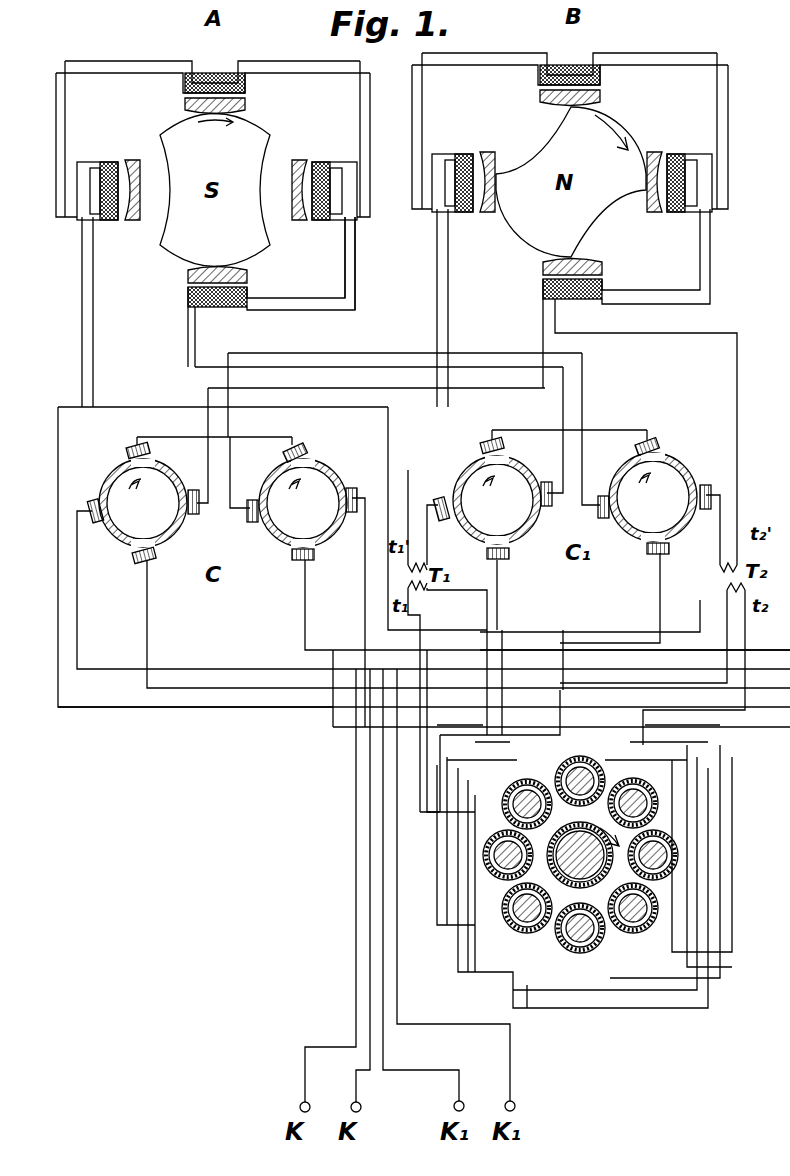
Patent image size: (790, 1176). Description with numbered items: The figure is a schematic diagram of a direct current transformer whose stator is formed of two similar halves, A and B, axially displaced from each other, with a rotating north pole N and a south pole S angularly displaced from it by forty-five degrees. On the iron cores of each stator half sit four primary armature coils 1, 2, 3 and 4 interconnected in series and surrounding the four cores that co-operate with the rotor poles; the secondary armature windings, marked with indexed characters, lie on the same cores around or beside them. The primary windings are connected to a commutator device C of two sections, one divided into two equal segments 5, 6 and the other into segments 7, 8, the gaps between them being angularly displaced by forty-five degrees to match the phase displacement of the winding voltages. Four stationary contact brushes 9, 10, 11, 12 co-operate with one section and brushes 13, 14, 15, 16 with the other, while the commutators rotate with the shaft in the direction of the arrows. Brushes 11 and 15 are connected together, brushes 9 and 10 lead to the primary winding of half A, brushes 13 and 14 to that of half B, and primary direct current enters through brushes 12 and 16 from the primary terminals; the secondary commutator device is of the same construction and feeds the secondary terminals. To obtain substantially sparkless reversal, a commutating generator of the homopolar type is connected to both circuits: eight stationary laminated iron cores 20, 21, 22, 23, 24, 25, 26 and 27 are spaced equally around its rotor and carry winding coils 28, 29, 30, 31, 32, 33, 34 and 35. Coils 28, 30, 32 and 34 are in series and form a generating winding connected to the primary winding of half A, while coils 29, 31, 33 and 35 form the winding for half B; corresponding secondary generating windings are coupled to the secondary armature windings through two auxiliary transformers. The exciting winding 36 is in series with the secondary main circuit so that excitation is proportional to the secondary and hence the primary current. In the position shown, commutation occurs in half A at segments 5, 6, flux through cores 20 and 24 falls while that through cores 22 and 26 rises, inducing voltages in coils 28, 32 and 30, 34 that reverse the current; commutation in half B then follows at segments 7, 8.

The primary armature coil 1 is at (613, 82).
The primary armature coil 2 is at (680, 132).
The primary armature coil 3 is at (613, 272).
The primary armature coil 4 is at (473, 228).
The commutator segment 5 is at (120, 548).
The commutator segment 6 is at (170, 470).
The commutator segment 7 is at (268, 535).
The commutator segment 8 is at (340, 475).
The contact brush 9 is at (90, 495).
The contact brush 10 is at (195, 515).
The contact brush 11 is at (125, 442).
The contact brush 12 is at (138, 562).
The contact brush 13 is at (250, 497).
The contact brush 14 is at (354, 515).
The contact brush 15 is at (305, 445).
The contact brush 16 is at (295, 560).
The iron core 20 is at (588, 784).
The iron core 21 is at (530, 800).
The iron core 22 is at (500, 860).
The iron core 23 is at (518, 912).
The iron core 24 is at (582, 935).
The iron core 25 is at (628, 915).
The iron core 26 is at (658, 868).
The iron core 27 is at (640, 805).
The winding coil 28 is at (578, 762).
The winding coil 29 is at (515, 810).
The winding coil 30 is at (505, 850).
The winding coil 31 is at (535, 912).
The winding coil 32 is at (575, 940).
The winding coil 33 is at (642, 912).
The winding coil 34 is at (665, 848).
The winding coil 35 is at (640, 798).
The exciting winding 36 is at (598, 868).